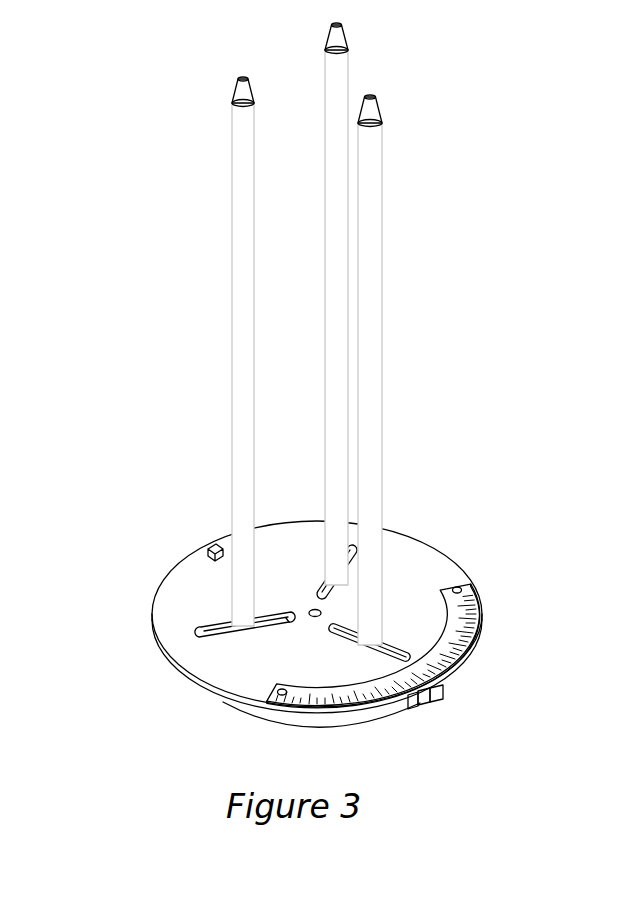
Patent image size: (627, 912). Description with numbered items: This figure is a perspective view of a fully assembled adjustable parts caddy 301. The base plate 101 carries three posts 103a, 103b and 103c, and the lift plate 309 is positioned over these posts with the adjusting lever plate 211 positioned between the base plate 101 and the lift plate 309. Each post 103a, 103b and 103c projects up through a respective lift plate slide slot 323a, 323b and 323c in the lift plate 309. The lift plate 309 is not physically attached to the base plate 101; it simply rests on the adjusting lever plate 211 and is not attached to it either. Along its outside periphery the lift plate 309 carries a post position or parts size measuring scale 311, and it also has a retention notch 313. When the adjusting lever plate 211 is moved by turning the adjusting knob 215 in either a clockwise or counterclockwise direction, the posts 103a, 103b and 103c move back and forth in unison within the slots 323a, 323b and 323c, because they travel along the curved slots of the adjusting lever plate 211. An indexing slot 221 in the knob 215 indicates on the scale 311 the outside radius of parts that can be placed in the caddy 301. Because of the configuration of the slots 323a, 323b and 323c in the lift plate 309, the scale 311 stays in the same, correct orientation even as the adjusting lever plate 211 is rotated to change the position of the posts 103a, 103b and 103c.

The adjustable parts caddy 301 is at (416, 397).
The base plate 101 is at (300, 720).
The post 103a is at (367, 166).
The post 103b is at (335, 73).
The post 103c is at (247, 118).
The lift plate 309 is at (442, 550).
The post position or parts size measuring scale 311 is at (467, 603).
The retention notch 313 is at (212, 545).
The lift plate slide slot 323a is at (480, 633).
The lift plate slide slot 323b is at (337, 597).
The lift plate slide slot 323c is at (200, 627).
The knob 215 is at (443, 689).
The indexing slot 221 is at (433, 703).
The adjusting lever plate 211 is at (412, 704).